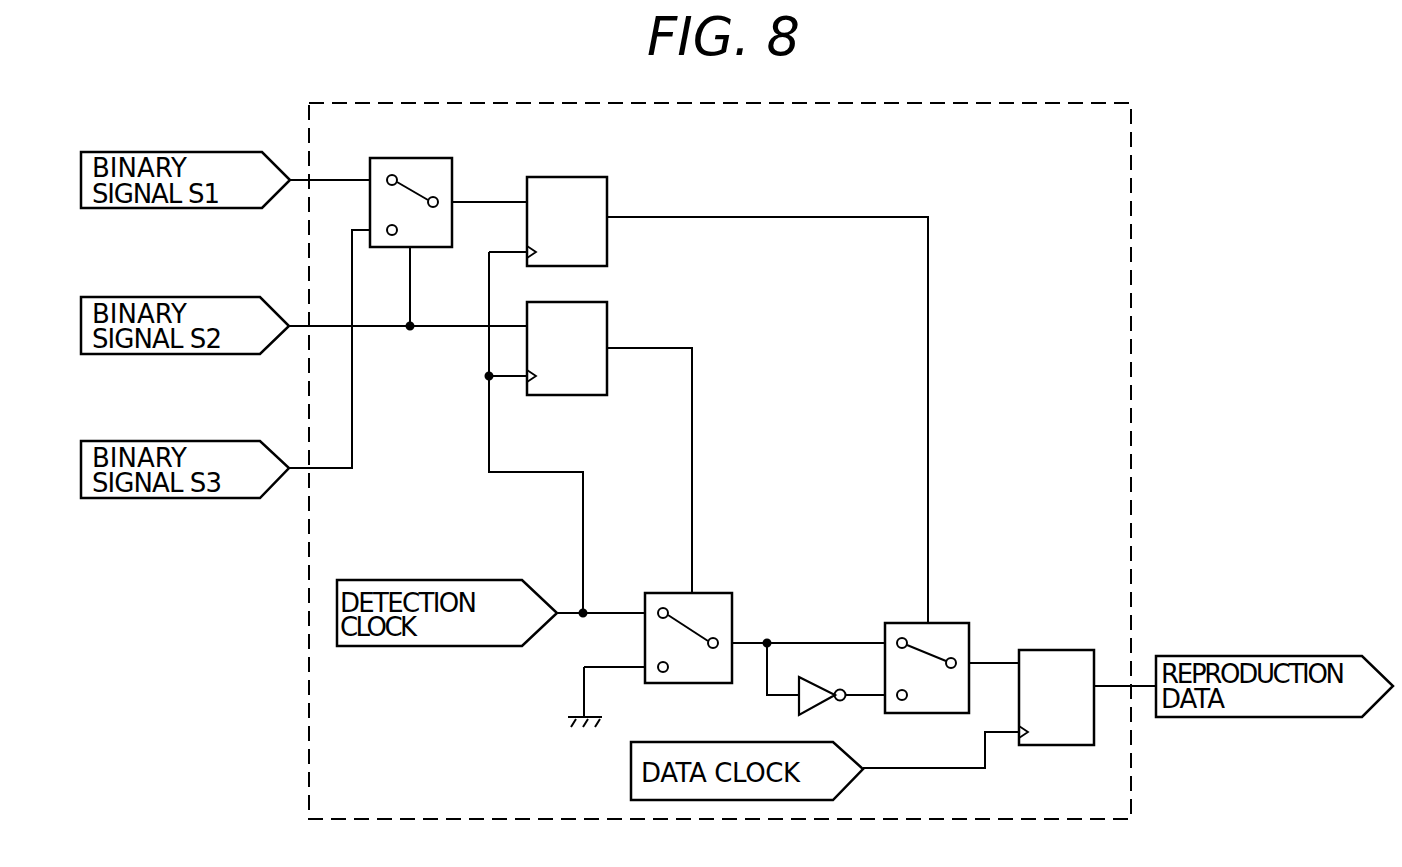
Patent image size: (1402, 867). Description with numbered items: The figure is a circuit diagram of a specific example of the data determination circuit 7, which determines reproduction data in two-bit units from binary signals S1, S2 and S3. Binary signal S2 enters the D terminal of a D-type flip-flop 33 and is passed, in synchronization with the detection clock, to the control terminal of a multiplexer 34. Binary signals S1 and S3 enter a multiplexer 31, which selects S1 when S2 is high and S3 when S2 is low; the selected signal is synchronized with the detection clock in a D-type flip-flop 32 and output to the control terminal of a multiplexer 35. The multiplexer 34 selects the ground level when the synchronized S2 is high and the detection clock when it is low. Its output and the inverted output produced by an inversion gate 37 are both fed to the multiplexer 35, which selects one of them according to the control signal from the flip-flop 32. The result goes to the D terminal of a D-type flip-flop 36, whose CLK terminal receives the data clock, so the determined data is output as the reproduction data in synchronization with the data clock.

The data determination circuit 7 is at (1055, 103).
The multiplexer 31 is at (420, 158).
The D-type flip-flop 32 is at (582, 177).
The D-type flip-flop 33 is at (580, 302).
The multiplexer 34 is at (716, 593).
The multiplexer 35 is at (945, 623).
The D-type flip-flop 36 is at (1063, 650).
The inversion gate 37 is at (818, 687).